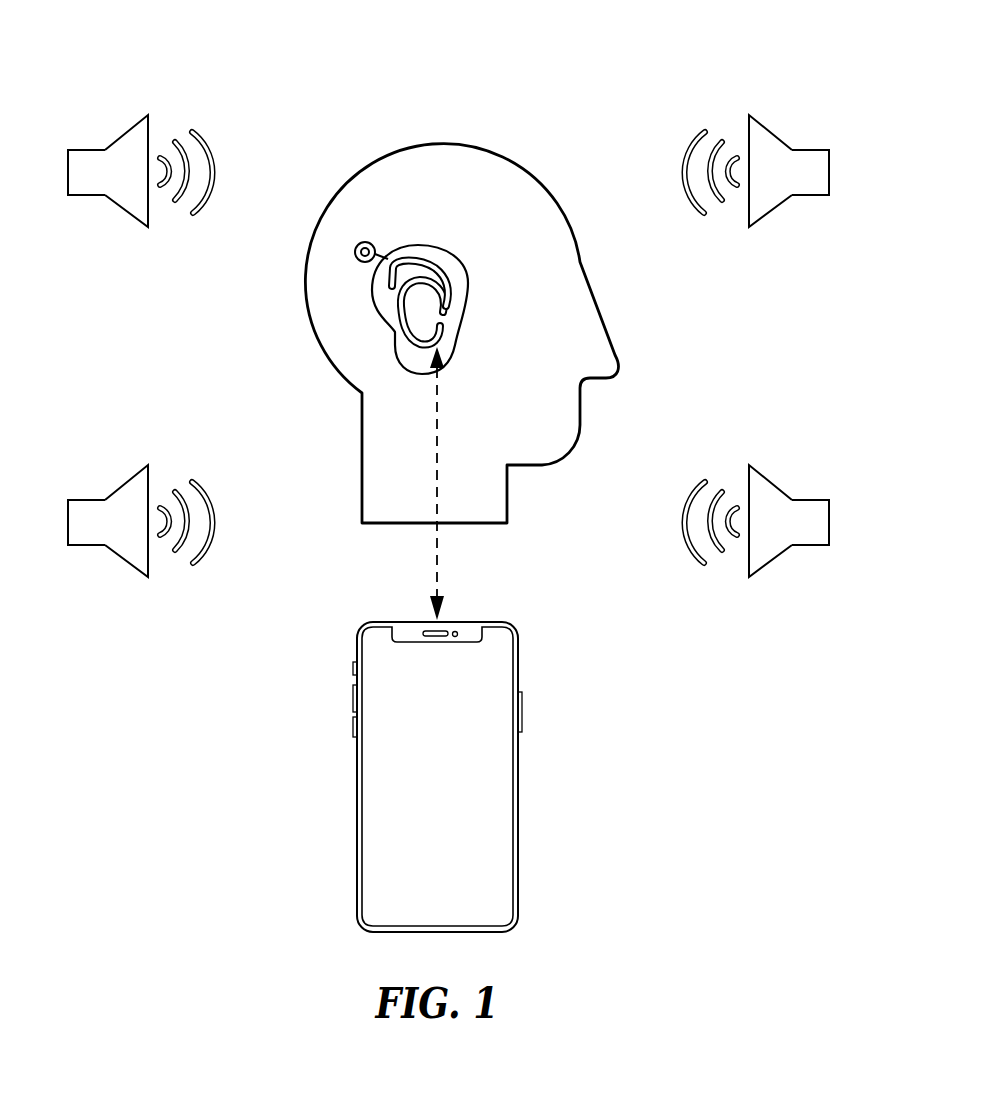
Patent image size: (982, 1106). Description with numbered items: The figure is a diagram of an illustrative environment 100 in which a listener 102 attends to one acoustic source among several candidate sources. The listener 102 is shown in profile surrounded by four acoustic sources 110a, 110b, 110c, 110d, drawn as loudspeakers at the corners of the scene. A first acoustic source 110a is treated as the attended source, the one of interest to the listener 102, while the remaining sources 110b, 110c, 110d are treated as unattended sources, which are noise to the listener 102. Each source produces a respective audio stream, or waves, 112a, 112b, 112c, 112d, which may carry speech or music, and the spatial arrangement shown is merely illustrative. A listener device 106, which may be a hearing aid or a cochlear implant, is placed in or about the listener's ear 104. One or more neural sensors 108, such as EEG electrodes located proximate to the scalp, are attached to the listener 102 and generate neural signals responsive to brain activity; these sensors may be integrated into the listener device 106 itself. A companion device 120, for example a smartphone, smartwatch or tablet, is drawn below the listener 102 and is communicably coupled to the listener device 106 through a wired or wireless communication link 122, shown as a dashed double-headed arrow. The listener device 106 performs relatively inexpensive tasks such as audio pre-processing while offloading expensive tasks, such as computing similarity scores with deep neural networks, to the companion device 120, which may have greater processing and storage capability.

The environment 100 is at (361, 35).
The listener 102 is at (437, 142).
The listener's ear 104 is at (458, 253).
The listener device 106 is at (468, 290).
The neural sensors 108 is at (357, 246).
The first acoustic source 110a is at (83, 186).
The acoustic source 110b is at (761, 186).
The acoustic source 110c is at (761, 536).
The acoustic source 110d is at (83, 536).
The audio stream 112a is at (206, 143).
The audio stream 112b is at (696, 142).
The audio stream 112c is at (696, 492).
The audio stream 112d is at (206, 493).
The companion device 120 is at (417, 763).
The communication link 122 is at (437, 560).